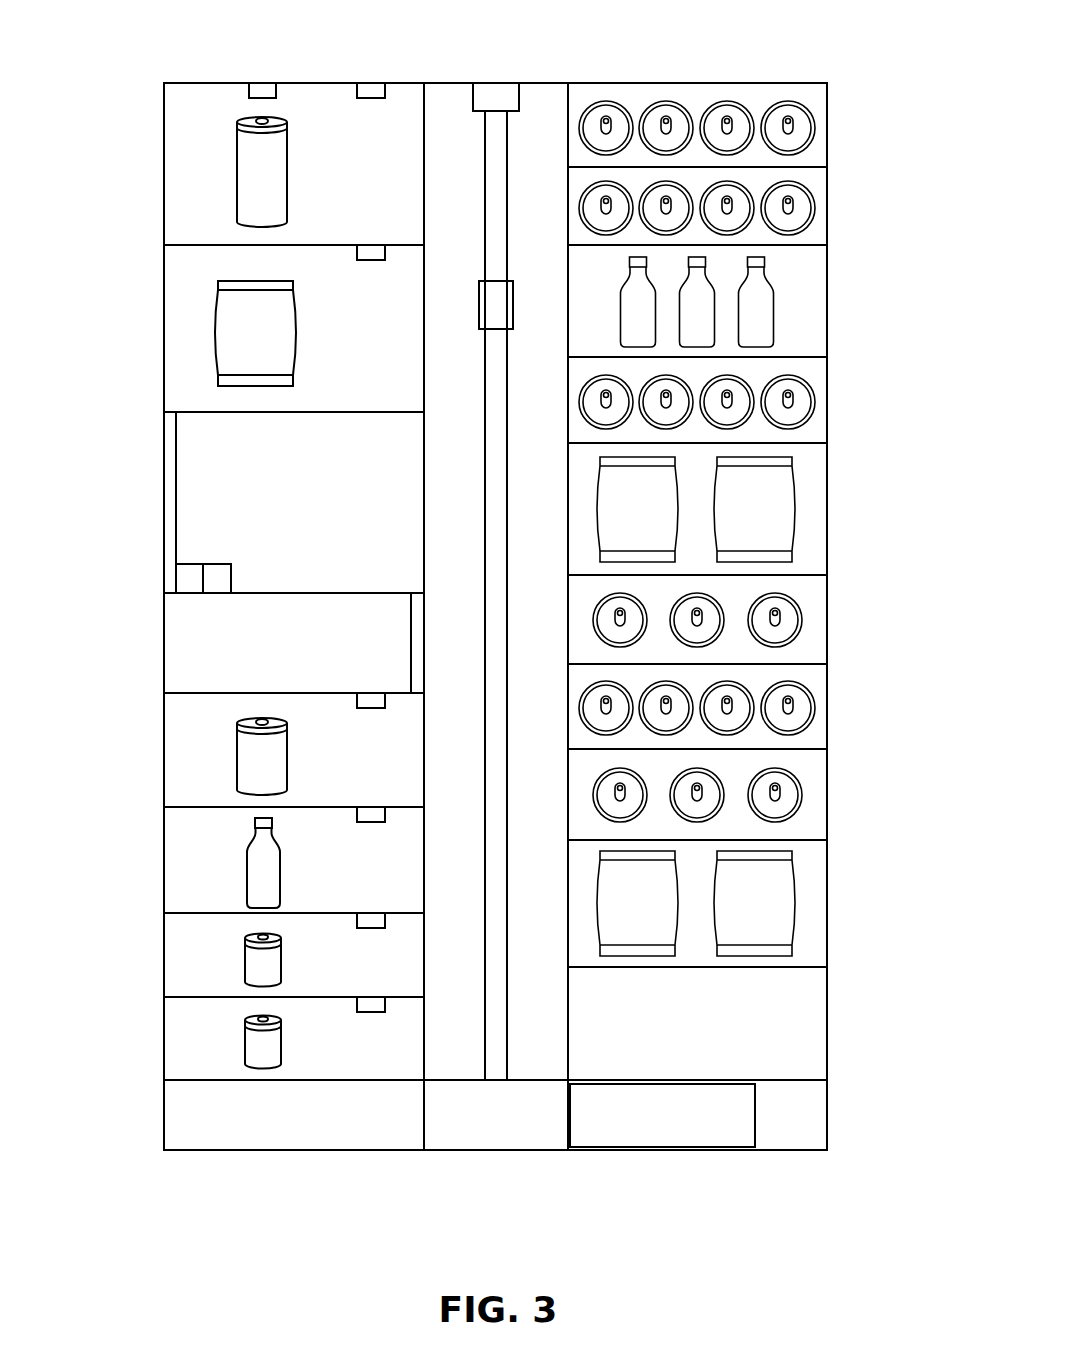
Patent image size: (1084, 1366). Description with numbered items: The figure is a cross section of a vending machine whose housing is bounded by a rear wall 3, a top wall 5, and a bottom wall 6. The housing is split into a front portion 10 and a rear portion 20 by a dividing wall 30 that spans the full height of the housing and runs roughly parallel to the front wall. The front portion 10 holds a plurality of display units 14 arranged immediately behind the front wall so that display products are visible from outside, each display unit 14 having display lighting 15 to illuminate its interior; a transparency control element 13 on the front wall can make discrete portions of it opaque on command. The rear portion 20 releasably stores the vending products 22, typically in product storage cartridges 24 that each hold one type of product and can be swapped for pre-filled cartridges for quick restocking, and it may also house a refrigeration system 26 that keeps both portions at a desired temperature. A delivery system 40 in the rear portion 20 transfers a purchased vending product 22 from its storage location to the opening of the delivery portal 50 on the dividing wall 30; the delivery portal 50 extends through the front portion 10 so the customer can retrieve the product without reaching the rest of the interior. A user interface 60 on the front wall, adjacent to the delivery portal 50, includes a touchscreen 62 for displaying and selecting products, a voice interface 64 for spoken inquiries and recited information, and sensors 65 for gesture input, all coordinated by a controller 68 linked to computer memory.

The rear wall 3 is at (828, 803).
The top wall 5 is at (670, 84).
The bottom wall 6 is at (550, 1152).
The front portion 10 is at (308, 1127).
The transparency control element 13 is at (164, 957).
The display units 14 is at (190, 183).
The display lighting 15 is at (372, 93).
The rear portion 20 is at (800, 1103).
The vending products 22 is at (765, 305).
The product storage cartridges 24 is at (828, 693).
The refrigeration system 26 is at (712, 1130).
The dividing wall 30 is at (422, 1128).
The delivery system 40 is at (513, 292).
The delivery portal 50 is at (182, 649).
The user interface 60 is at (148, 460).
The touchscreen 62 is at (172, 471).
The voice interface 64 is at (190, 582).
The sensors 65 is at (172, 588).
The controller 68 is at (220, 573).